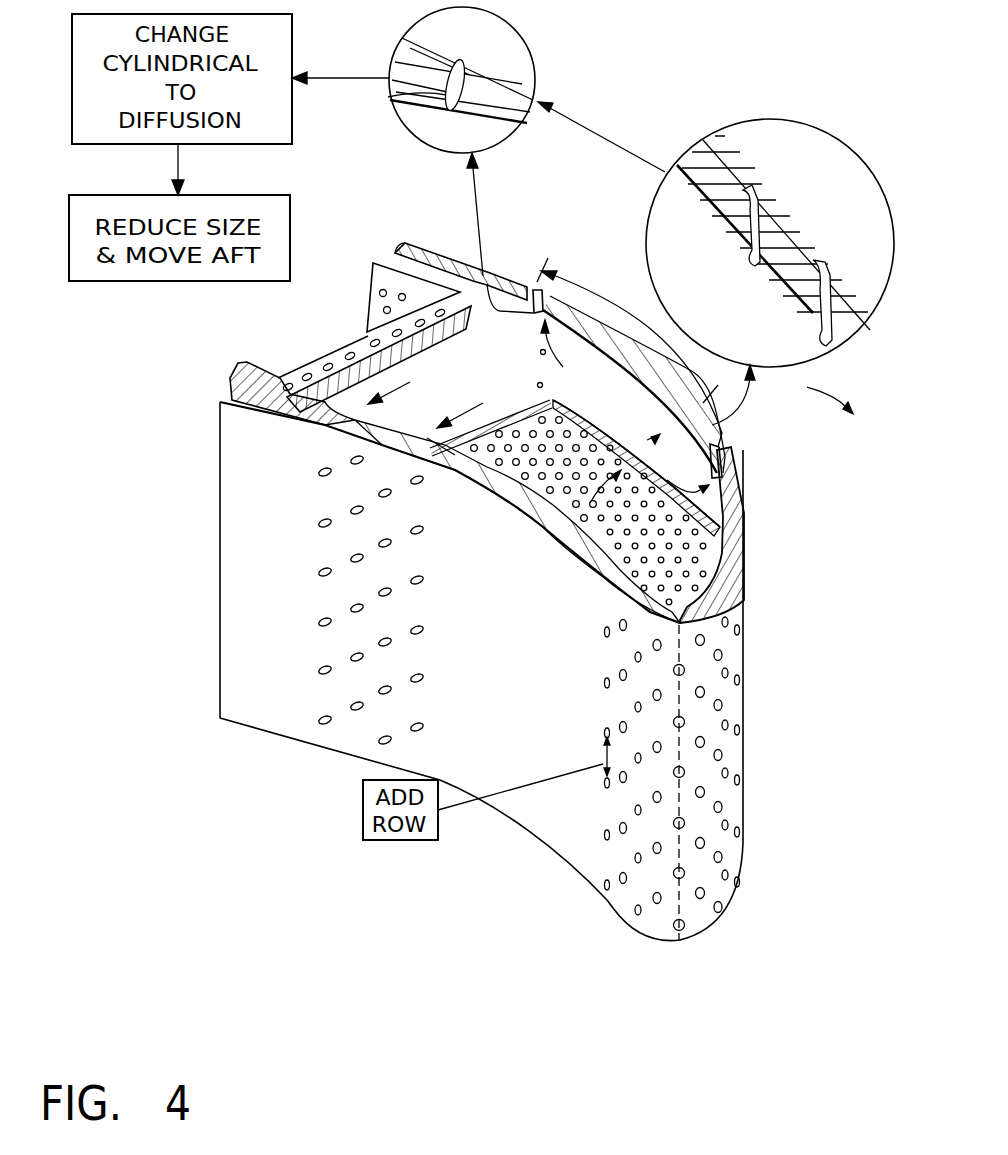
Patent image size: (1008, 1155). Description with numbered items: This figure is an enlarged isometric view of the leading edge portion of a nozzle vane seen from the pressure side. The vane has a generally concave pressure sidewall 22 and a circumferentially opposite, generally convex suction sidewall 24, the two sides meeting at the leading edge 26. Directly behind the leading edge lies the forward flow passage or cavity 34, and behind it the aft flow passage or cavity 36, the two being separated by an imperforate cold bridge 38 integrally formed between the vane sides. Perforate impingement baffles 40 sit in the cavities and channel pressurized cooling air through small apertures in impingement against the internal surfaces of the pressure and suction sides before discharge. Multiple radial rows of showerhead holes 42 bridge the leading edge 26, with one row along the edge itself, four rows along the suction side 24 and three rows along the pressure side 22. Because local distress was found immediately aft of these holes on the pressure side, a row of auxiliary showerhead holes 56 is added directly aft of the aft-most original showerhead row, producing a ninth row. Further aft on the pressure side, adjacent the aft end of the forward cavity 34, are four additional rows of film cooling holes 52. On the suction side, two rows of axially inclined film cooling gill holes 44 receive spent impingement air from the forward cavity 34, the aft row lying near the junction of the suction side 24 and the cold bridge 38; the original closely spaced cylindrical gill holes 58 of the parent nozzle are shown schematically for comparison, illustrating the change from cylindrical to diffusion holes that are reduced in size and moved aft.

The pressure sidewall 22 is at (511, 688).
The suction sidewall 24 is at (744, 662).
The leading edge 26 is at (681, 781).
The forward flow passage 34 is at (512, 480).
The aft flow passage 36 is at (233, 377).
The cold bridge 38 is at (462, 403).
The impingement baffle 40 is at (337, 347).
The showerhead holes 42 is at (679, 930).
The film cooling gill holes 44 is at (470, 57).
The film cooling holes 52 is at (417, 730).
The auxiliary showerhead holes 56 is at (603, 835).
The original gill holes 58 is at (824, 275).